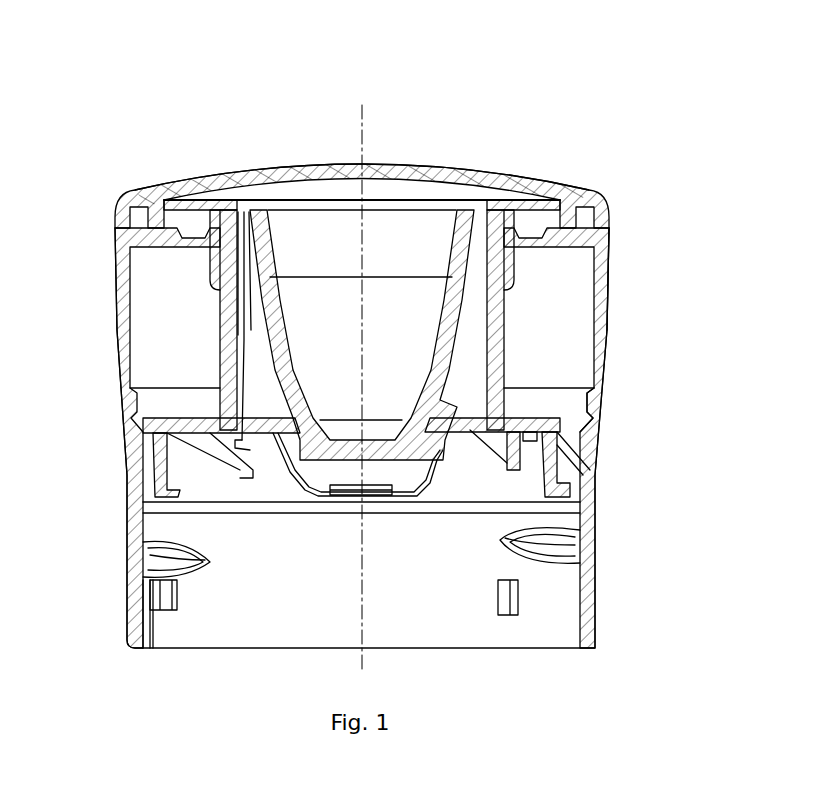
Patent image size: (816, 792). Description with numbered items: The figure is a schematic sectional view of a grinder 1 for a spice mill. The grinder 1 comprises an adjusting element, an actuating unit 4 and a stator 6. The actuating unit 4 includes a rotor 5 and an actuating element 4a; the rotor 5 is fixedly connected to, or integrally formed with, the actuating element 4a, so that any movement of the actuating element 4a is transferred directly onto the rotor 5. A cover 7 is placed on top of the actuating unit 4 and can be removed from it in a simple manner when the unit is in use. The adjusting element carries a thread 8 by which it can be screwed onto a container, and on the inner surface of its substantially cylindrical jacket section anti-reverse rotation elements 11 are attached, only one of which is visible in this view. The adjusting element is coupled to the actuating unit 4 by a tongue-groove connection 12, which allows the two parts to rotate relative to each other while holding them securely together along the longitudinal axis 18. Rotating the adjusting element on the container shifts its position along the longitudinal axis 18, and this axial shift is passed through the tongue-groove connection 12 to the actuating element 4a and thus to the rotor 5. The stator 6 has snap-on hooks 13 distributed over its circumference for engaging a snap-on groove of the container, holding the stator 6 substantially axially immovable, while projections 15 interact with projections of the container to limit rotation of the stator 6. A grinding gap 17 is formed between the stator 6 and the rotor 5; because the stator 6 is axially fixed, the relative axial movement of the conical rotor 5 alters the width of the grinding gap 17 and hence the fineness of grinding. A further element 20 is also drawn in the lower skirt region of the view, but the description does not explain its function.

The grinder 1 is at (607, 132).
The actuating unit 4 is at (608, 318).
The actuating element 4a is at (607, 261).
The rotor 5 is at (472, 217).
The stator 6 is at (510, 410).
The cover 7 is at (607, 203).
The thread 8 is at (567, 552).
The anti-reverse rotation element 11 is at (157, 597).
The tongue-groove connection 12 is at (587, 412).
The snap-on hooks 13 is at (557, 489).
The projections 15 is at (598, 466).
The grinding gap 17 is at (247, 215).
The longitudinal axis 18 is at (363, 125).
The guide rib 20 is at (520, 615).